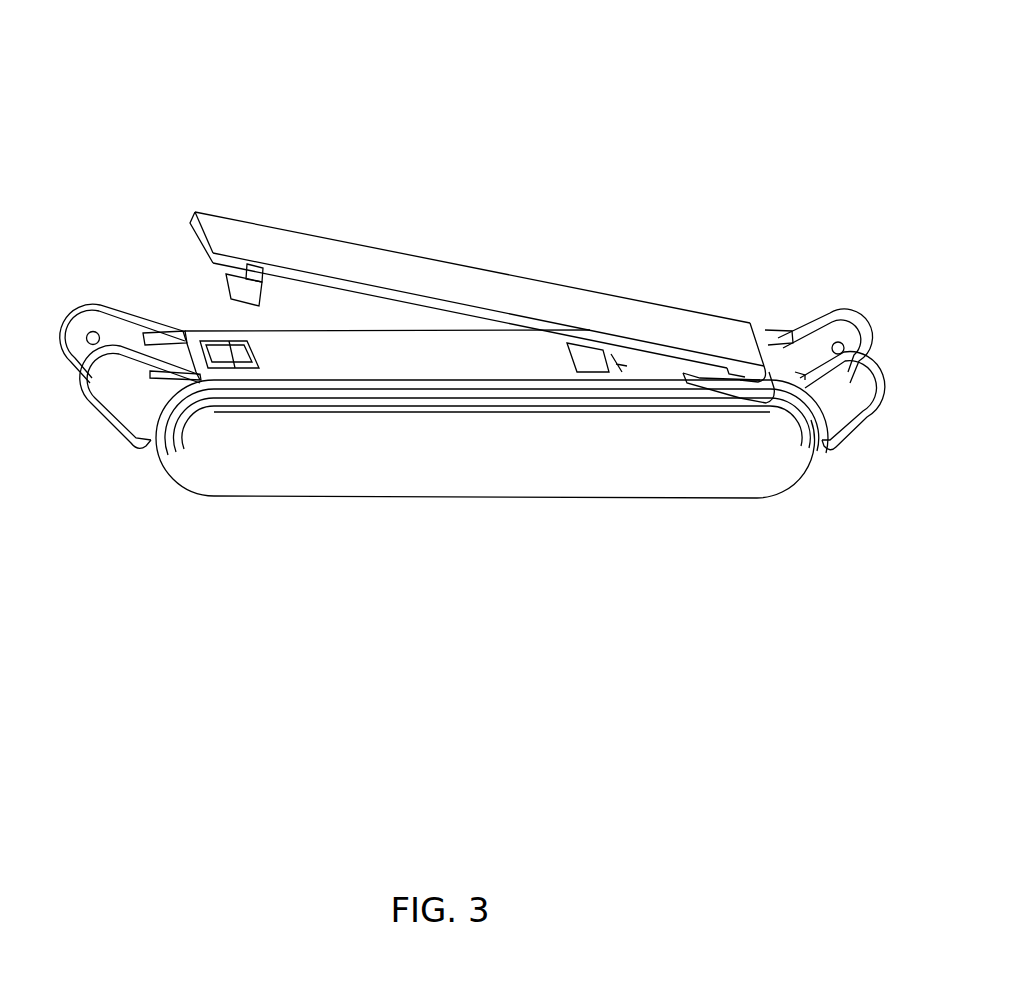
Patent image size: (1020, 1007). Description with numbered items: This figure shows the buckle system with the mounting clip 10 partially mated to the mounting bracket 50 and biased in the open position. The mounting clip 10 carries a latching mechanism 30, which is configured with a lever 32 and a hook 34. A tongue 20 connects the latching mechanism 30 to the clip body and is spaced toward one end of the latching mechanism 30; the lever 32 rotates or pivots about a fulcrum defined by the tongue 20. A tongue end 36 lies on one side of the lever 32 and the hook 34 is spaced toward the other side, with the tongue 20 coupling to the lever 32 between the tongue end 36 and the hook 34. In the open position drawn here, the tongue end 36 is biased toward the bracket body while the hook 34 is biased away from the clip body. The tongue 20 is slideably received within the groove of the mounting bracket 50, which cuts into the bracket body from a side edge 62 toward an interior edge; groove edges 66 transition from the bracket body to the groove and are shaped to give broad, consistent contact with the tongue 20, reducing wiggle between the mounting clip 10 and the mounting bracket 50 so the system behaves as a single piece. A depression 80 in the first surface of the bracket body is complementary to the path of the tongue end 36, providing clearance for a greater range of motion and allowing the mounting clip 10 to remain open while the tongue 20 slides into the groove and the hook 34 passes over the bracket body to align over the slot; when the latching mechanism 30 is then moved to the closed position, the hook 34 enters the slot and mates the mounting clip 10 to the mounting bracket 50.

The mounting clip 10 is at (369, 448).
The tongue 20 is at (622, 368).
The latching mechanism 30 is at (424, 245).
The lever 32 is at (459, 283).
The hook 34 is at (228, 293).
The tongue end 36 is at (727, 343).
The mounting bracket 50 is at (317, 362).
The side edge 62 is at (222, 356).
The groove edges 66 is at (587, 362).
The depression 80 is at (737, 388).